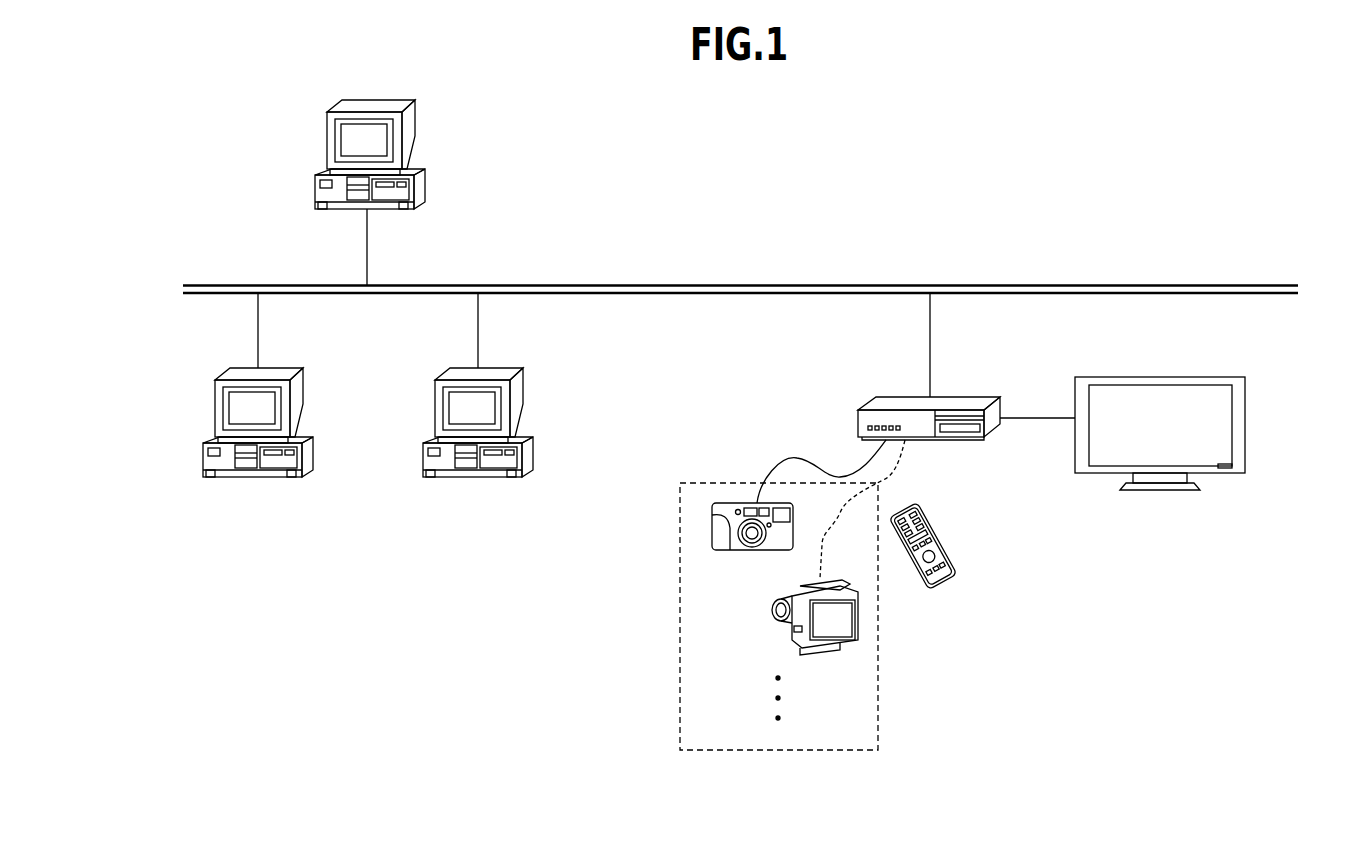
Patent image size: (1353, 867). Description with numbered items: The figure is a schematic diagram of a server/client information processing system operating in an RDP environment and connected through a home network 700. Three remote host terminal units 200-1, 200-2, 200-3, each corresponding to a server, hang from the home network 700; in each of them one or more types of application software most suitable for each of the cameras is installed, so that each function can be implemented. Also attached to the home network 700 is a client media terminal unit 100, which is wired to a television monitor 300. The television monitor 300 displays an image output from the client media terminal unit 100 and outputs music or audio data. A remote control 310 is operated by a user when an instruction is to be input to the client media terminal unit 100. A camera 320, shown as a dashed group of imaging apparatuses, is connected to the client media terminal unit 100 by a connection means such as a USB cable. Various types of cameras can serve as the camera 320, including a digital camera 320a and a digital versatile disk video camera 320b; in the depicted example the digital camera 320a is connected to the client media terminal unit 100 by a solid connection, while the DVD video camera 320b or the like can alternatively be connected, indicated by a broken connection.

The home network 700 is at (691, 284).
The remote host terminal unit 200-1 is at (378, 99).
The remote host terminal unit 200-2 is at (255, 478).
The remote host terminal unit 200-3 is at (475, 478).
The client media terminal unit 100 is at (975, 396).
The television monitor 300 is at (1162, 377).
The remote control 310 is at (942, 590).
The camera 320 is at (680, 655).
The digital camera 320a is at (712, 528).
The DVD video camera 320b is at (772, 628).